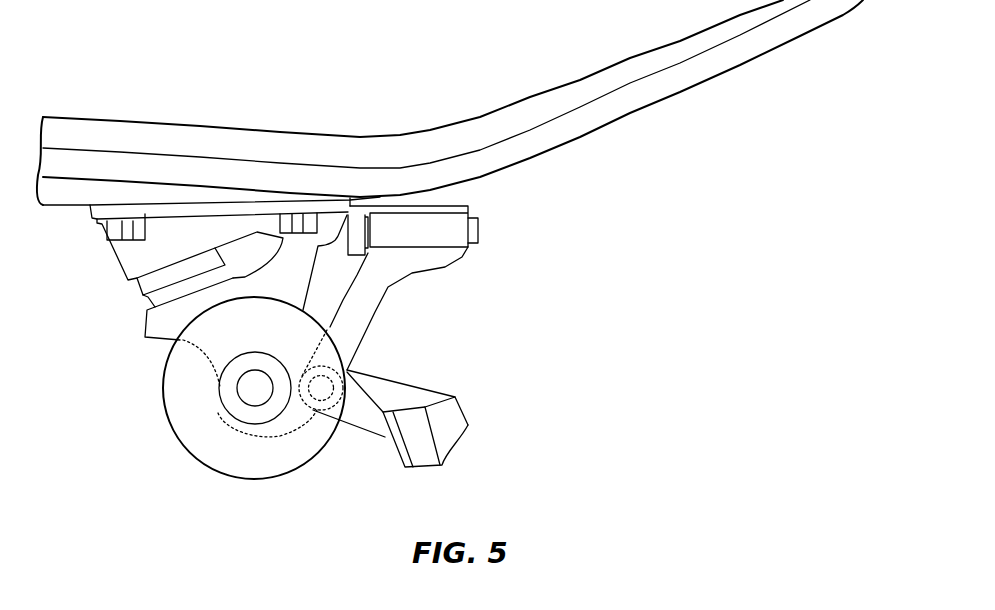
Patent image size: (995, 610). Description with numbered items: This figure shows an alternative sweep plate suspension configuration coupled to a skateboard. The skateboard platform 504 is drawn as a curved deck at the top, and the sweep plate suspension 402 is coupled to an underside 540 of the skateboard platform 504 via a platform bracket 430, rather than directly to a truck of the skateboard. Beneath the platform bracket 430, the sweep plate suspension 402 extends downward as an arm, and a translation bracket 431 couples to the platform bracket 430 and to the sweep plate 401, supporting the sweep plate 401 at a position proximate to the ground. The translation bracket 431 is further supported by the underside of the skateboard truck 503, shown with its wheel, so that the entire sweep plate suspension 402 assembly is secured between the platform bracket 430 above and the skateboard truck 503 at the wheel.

The skateboard platform 504 is at (748, 43).
The underside 540 is at (451, 102).
The platform bracket 430 is at (448, 227).
The sweep plate suspension 402 is at (400, 302).
The translation bracket 431 is at (372, 340).
The sweep plate 401 is at (442, 422).
The skateboard truck 503 is at (247, 389).